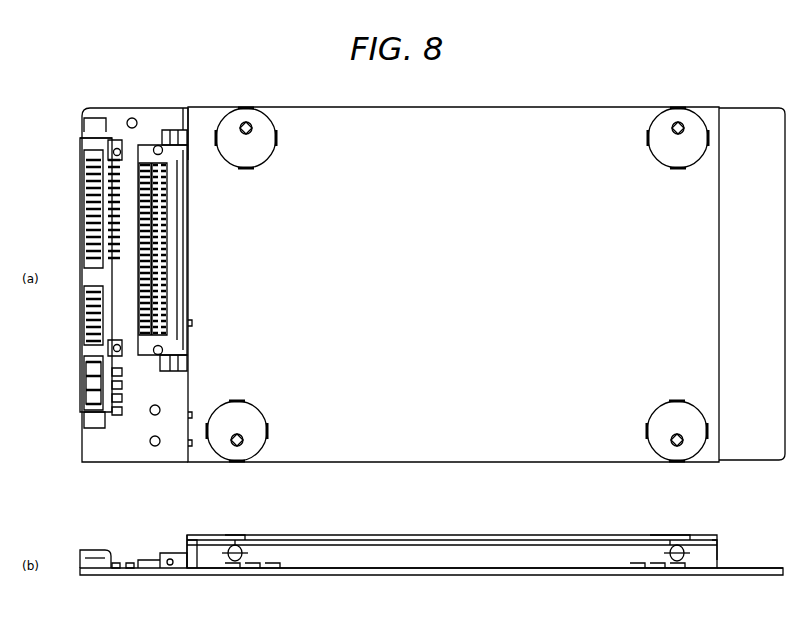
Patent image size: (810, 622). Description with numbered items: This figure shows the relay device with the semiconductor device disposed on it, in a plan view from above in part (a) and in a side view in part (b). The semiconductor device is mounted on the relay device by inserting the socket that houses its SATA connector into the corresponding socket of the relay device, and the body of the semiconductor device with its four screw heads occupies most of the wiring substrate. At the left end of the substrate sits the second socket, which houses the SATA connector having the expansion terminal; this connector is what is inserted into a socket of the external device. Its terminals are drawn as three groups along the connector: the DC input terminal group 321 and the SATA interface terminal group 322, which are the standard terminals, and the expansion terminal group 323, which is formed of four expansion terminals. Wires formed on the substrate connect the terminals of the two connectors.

The DC input terminal group 321 is at (70, 160).
The SATA interface terminal group 322 is at (70, 290).
The expansion terminal group 323 is at (70, 357).